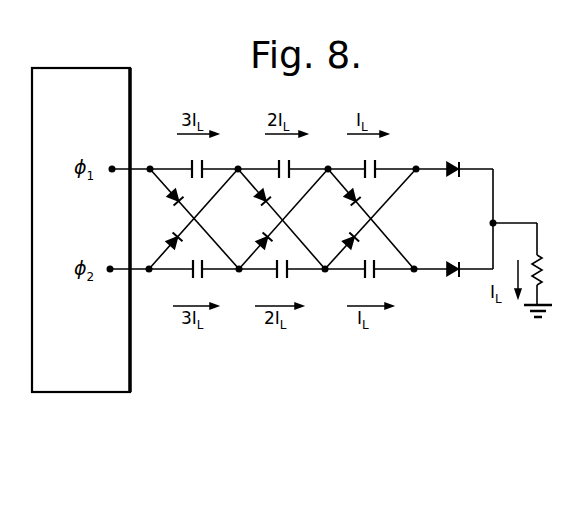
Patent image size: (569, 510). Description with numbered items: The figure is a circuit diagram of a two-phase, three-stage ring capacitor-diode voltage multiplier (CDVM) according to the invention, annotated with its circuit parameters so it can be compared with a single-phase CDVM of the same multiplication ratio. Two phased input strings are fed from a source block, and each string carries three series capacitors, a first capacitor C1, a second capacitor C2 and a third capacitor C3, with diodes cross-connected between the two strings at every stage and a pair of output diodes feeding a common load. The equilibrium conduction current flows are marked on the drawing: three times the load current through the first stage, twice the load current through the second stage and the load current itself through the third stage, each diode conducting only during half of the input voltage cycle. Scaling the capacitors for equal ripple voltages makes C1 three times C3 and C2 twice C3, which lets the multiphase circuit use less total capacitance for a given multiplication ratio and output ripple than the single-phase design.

The first stage capacitor C1 is at (202, 221).
The second stage capacitor C2 is at (284, 221).
The third stage capacitor C3 is at (376, 221).